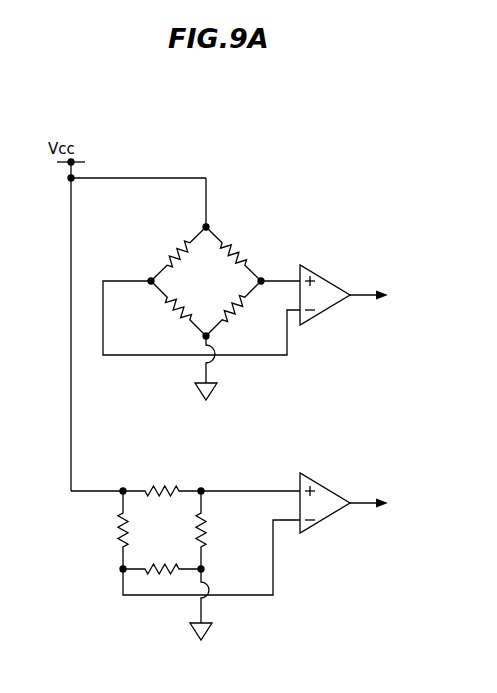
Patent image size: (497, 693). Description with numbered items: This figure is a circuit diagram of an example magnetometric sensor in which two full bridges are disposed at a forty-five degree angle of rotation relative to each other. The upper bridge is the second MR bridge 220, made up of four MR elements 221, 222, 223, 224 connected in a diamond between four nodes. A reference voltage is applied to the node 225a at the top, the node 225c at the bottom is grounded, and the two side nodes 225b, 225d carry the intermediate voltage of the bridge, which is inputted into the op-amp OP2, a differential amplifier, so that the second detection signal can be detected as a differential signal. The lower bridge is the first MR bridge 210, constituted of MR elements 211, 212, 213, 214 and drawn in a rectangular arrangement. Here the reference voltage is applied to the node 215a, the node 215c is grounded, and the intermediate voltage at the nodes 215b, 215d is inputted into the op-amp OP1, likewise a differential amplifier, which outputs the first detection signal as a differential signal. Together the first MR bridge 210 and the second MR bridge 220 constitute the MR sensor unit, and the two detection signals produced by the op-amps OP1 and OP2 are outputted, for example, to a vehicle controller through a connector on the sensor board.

The first MR bridge 210 is at (267, 465).
The MR element 211 is at (120, 530).
The MR element 212 is at (161, 487).
The MR element 213 is at (159, 575).
The MR element 214 is at (206, 537).
The node 215a is at (122, 489).
The node 215b is at (122, 571).
The node 215c is at (203, 571).
The node 215d is at (202, 489).
The second MR bridge 220 is at (291, 216).
The MR element 221 is at (172, 256).
The MR element 222 is at (229, 253).
The MR element 223 is at (176, 310).
The MR element 224 is at (235, 315).
The node 225a is at (205, 226).
The node 225b is at (150, 280).
The node 225c is at (205, 337).
The node 225d is at (262, 280).
The op-amp OP1 is at (334, 489).
The op-amp OP2 is at (329, 279).